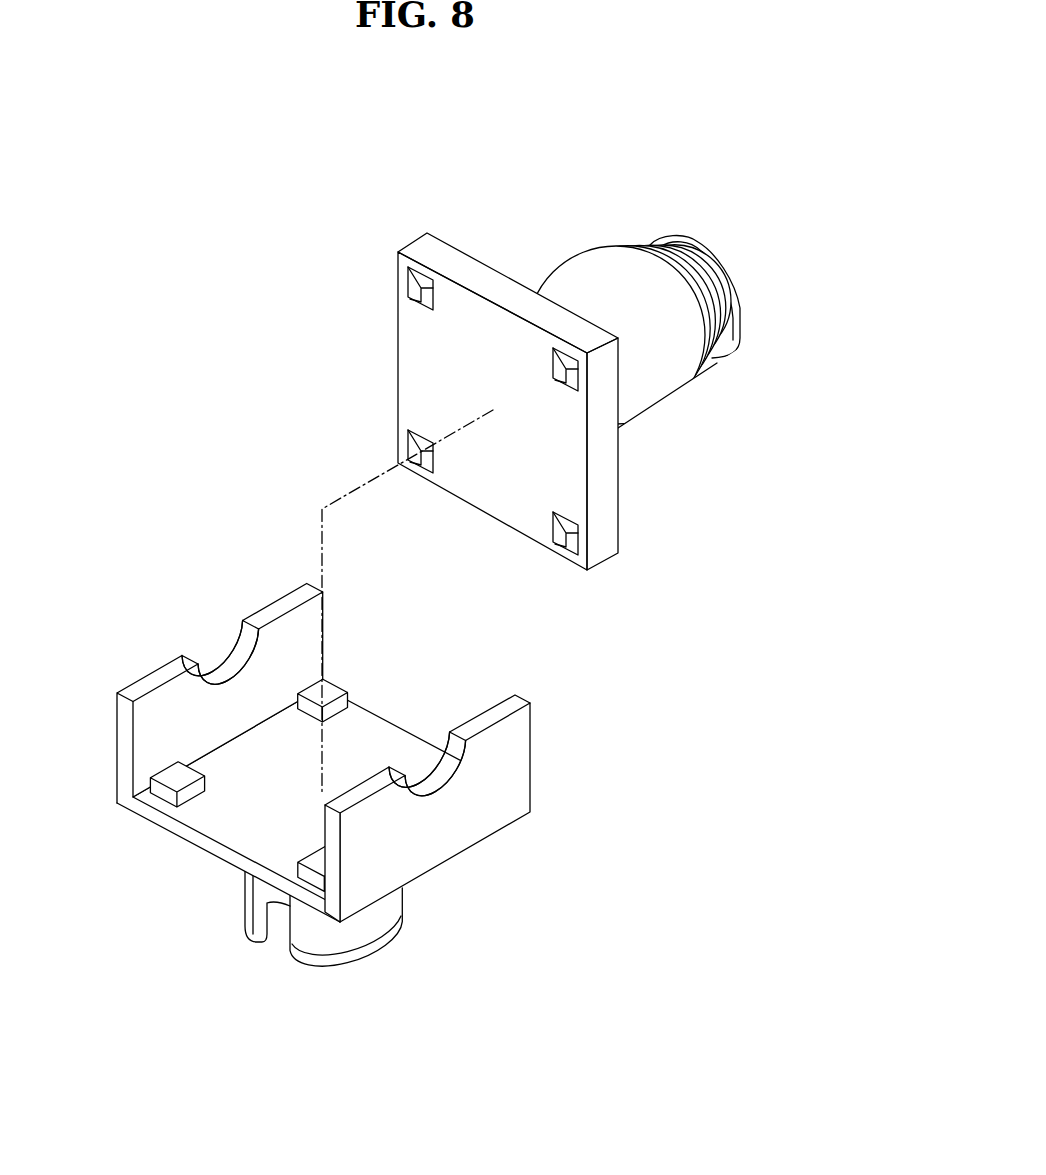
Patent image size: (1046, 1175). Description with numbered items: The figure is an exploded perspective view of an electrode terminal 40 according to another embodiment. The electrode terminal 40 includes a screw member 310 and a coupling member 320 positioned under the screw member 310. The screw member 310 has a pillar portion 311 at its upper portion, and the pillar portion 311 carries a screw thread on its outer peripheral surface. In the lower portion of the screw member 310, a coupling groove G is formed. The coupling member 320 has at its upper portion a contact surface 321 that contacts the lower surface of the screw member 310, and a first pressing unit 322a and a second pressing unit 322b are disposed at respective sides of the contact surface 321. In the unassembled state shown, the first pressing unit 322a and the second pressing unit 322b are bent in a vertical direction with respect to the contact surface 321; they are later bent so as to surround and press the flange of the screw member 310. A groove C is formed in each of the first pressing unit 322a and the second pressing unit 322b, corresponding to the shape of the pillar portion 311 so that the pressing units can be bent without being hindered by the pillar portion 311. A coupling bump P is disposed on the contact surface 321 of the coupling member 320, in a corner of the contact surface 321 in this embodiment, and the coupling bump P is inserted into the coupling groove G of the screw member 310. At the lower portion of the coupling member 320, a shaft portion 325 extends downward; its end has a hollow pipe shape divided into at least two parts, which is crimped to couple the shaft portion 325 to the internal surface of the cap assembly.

The electrode terminal 40 is at (742, 186).
The screw member 310 is at (684, 410).
The pillar portion 311 is at (612, 262).
The coupling groove G is at (568, 540).
The coupling member 320 is at (560, 797).
The contact surface 321 is at (390, 735).
The first pressing unit 322a is at (526, 759).
The second pressing unit 322b is at (307, 635).
The groove C is at (224, 664).
The coupling bump P is at (338, 684).
The shaft portion 325 is at (360, 938).